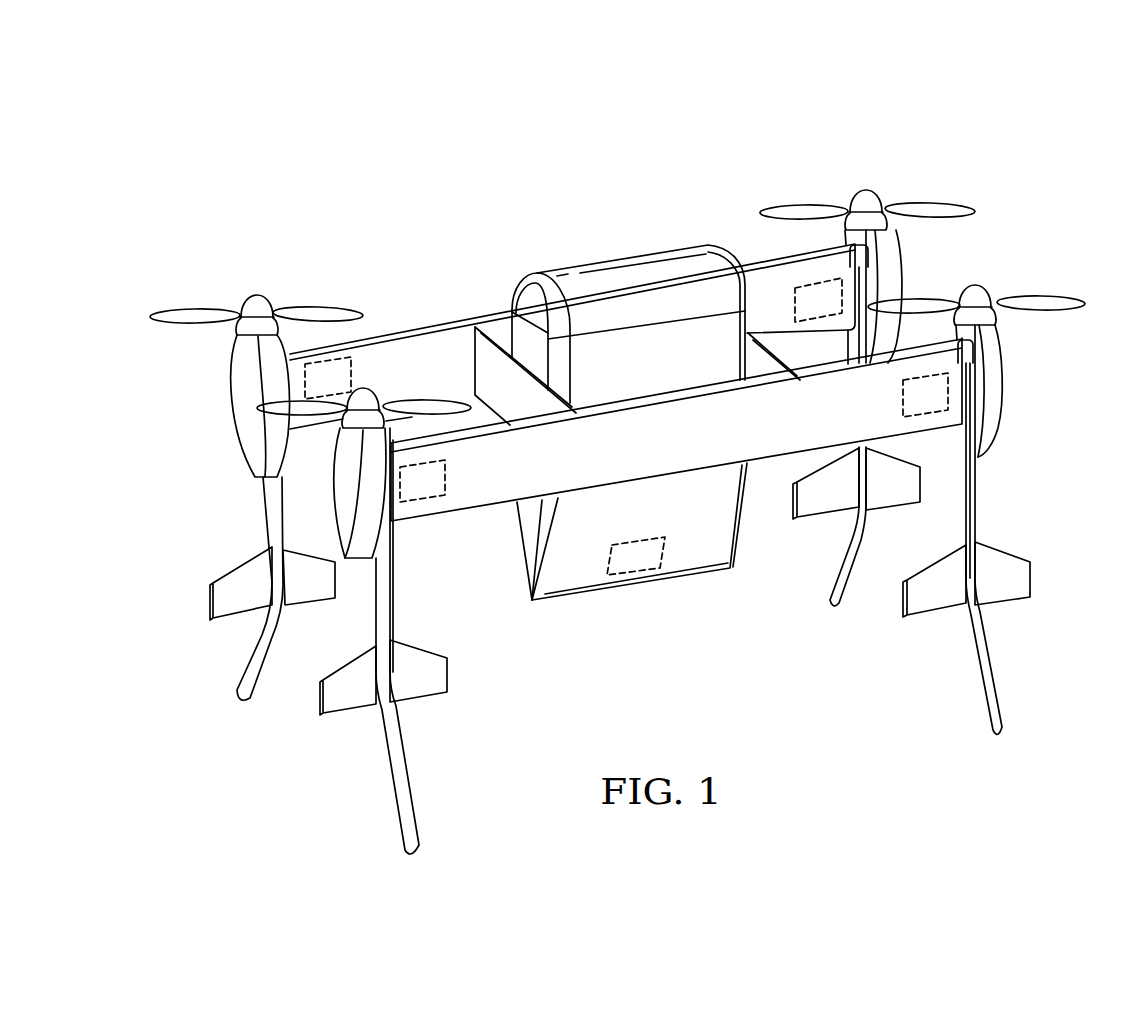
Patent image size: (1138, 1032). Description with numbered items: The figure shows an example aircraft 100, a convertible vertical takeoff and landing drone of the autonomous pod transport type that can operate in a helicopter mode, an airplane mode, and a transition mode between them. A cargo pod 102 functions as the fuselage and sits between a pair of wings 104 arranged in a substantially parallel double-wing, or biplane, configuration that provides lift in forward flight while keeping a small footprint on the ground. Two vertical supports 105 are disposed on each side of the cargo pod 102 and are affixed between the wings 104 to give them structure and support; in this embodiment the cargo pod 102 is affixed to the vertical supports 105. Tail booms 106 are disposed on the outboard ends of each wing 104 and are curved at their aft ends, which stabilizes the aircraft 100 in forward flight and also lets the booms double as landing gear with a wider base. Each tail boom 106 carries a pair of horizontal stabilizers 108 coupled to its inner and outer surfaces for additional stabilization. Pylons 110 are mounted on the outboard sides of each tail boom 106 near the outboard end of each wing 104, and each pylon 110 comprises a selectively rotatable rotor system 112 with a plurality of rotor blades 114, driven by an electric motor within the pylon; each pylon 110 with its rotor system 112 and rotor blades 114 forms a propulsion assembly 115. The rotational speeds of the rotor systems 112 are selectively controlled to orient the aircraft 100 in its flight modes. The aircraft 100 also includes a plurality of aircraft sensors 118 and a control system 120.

The aircraft 100 is at (478, 178).
The cargo pod 102 is at (610, 254).
The wings 104 is at (485, 313).
The vertical supports 105 is at (543, 407).
The tail booms 106 is at (236, 684).
The horizontal stabilizers 108 is at (225, 607).
The pylons 110 is at (242, 398).
The rotor system 112 is at (256, 289).
The rotor blades 114 is at (168, 308).
The propulsion assembly 115 is at (202, 248).
The aircraft sensors 118 is at (305, 380).
The control system 120 is at (625, 578).